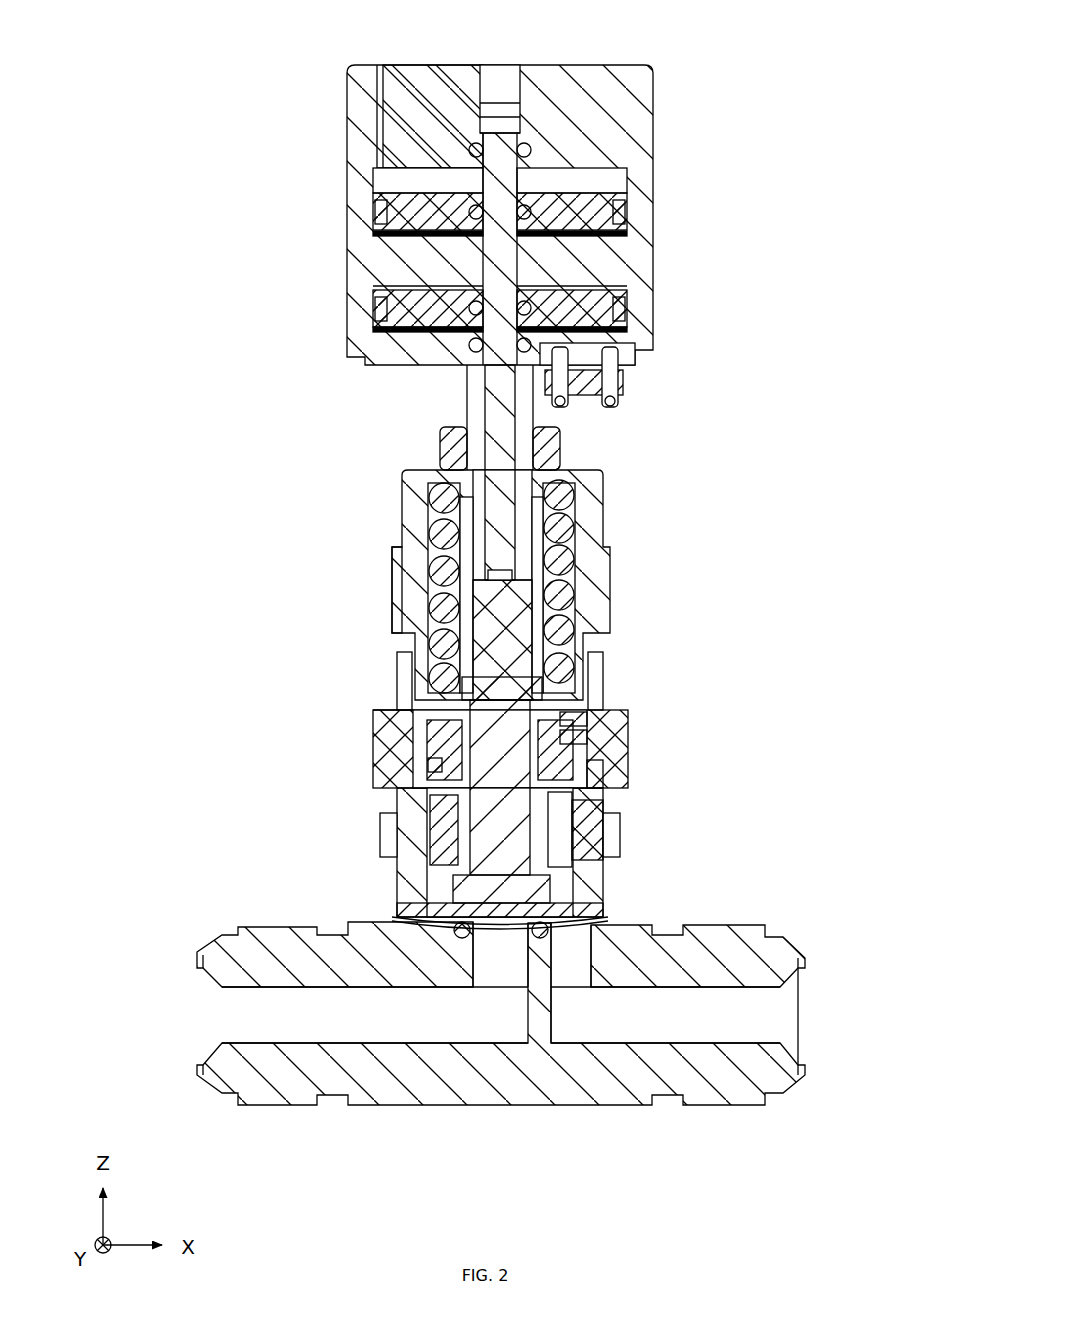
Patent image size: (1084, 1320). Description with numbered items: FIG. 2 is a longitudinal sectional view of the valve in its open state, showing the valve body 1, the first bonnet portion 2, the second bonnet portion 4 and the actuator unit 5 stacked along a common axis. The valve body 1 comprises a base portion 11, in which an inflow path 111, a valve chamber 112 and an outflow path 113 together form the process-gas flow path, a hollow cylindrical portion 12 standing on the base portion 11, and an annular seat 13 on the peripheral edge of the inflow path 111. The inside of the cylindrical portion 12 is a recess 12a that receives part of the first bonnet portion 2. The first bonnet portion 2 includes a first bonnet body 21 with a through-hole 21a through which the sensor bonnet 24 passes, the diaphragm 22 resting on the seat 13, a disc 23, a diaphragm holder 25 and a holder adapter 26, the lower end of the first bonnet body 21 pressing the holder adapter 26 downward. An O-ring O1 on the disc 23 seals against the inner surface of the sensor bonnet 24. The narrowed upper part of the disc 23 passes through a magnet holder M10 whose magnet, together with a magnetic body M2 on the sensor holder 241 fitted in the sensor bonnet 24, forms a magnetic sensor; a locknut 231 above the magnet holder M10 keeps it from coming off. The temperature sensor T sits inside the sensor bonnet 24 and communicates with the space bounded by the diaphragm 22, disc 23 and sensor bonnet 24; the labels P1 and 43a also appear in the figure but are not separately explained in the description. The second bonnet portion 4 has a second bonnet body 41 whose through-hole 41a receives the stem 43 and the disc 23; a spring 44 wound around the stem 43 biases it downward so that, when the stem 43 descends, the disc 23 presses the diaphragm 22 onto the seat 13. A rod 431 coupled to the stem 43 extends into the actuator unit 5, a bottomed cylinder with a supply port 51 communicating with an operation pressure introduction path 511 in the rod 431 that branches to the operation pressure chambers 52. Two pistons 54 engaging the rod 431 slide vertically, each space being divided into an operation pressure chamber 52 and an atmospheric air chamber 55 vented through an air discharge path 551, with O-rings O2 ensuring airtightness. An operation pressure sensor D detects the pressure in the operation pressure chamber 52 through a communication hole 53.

The valve body 1 is at (568, 997).
The base portion 11 is at (657, 923).
The inflow path 111 is at (455, 1043).
The valve chamber 112 is at (573, 937).
The outflow path 113 is at (620, 1043).
The cylindrical portion 12 is at (623, 873).
The recess 12a is at (605, 858).
The seat 13 is at (808, 988).
The first bonnet portion 2 is at (420, 803).
The first bonnet body 21 is at (372, 745).
The through-hole 21a is at (378, 716).
The diaphragm 22 is at (364, 956).
The disc 23 is at (378, 825).
The locknut 231 is at (600, 716).
The sensor bonnet 24 is at (373, 790).
The sensor holder 241 is at (600, 740).
The diaphragm holder 25 is at (378, 880).
The holder adapter 26 is at (378, 900).
The O-ring O1 is at (428, 765).
The magnet holder M10 is at (380, 705).
The magnetic body M2 is at (600, 765).
The temperature sensor T is at (630, 826).
The pressure port P1 is at (585, 806).
The second bonnet portion 4 is at (543, 532).
The second bonnet body 41 is at (612, 613).
The through-hole 41a is at (405, 582).
The stem 43 is at (612, 568).
The piston flange 43a is at (445, 470).
The rod 431 is at (540, 462).
The spring 44 is at (600, 518).
The actuator unit 5 is at (523, 215).
The supply port 51 is at (512, 78).
The operation pressure introduction path 511 is at (520, 272).
The operation pressure chamber 52 is at (617, 220).
The communication hole 53 is at (620, 352).
The piston 54 is at (365, 205).
The atmospheric air chamber 55 is at (630, 180).
The air discharge path 551 is at (392, 74).
The O-ring O2 is at (372, 213).
The operation pressure sensor D is at (623, 382).